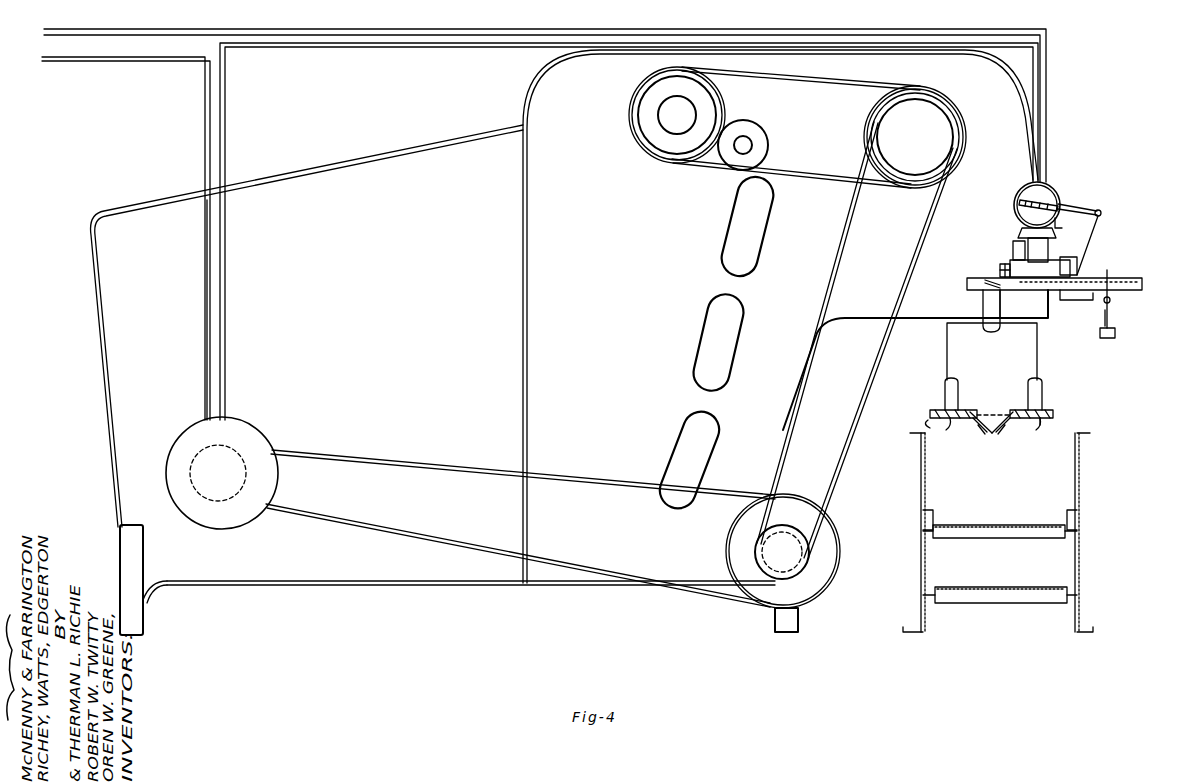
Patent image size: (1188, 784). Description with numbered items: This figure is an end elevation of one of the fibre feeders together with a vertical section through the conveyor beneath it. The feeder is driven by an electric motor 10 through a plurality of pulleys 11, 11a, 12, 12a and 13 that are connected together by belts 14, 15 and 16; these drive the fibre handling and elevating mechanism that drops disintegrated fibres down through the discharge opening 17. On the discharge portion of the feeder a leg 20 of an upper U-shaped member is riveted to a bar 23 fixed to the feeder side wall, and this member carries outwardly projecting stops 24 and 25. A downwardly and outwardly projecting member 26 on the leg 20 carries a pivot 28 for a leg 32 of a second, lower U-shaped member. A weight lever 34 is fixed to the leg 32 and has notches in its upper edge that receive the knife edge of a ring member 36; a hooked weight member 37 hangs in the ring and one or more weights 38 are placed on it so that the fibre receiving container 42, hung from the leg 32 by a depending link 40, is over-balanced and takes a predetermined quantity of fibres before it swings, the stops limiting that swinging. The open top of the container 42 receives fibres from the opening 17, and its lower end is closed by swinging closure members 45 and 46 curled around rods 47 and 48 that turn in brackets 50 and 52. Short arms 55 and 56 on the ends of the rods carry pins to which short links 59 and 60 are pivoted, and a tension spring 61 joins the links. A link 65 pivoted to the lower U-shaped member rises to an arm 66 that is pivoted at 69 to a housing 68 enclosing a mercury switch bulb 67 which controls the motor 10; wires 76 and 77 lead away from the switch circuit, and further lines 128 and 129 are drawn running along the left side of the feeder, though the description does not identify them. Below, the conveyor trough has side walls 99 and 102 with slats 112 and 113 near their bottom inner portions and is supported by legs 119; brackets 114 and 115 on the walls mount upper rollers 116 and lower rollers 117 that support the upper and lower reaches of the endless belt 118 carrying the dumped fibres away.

The electric motor 10 is at (255, 425).
The pulley 11 is at (733, 533).
The pulley 11a is at (782, 552).
The pulley 12 is at (868, 103).
The pulley 12a is at (915, 137).
The pulley 13 is at (648, 150).
The belt 14 is at (580, 478).
The belt 15 is at (845, 465).
The belt 16 is at (815, 182).
The discharge opening 17 is at (937, 320).
The leg 20 is at (1052, 250).
The bar 23 is at (1010, 250).
The stop 24 is at (1090, 260).
The stop 25 is at (1085, 305).
The downwardly and outwardly projecting member 26 is at (998, 262).
The pivot 28 is at (992, 268).
The leg 32 is at (962, 284).
The weight lever 34 is at (1143, 284).
The ring member 36 is at (1109, 268).
The hooked weight member 37 is at (1110, 312).
The weight 38 is at (1116, 330).
The depending link 40 is at (1002, 308).
The fibre receiving container 42 is at (1038, 355).
The closure member 45 is at (1008, 432).
The closure member 46 is at (975, 435).
The rod 47 is at (1043, 410).
The rod 48 is at (928, 412).
The bracket 50 is at (1043, 390).
The bracket 52 is at (943, 392).
The short arm 55 is at (1055, 412).
The short arm 56 is at (914, 425).
The short link 59 is at (940, 429).
The short link 60 is at (1040, 426).
The tension spring 61 is at (1000, 412).
The link 65 is at (1092, 240).
The arm 66 is at (1088, 192).
The mercury switch bulb 67 is at (1038, 212).
The housing 68 is at (1052, 188).
The pivot 69 is at (1072, 227).
The wire 76 is at (490, 47).
The wire 77 is at (1047, 92).
The side wall 99 is at (1072, 482).
The side wall 102 is at (923, 490).
The slat 112 is at (1060, 512).
The slat 113 is at (935, 515).
The bracket 114 is at (1072, 565).
The bracket 115 is at (918, 560).
The upper roller 116 is at (1030, 540).
The lower roller 117 is at (1030, 606).
The endless belt 118 is at (1008, 515).
The leg 119 is at (915, 618).
The pipe 128 is at (48, 64).
The pipe 129 is at (205, 344).